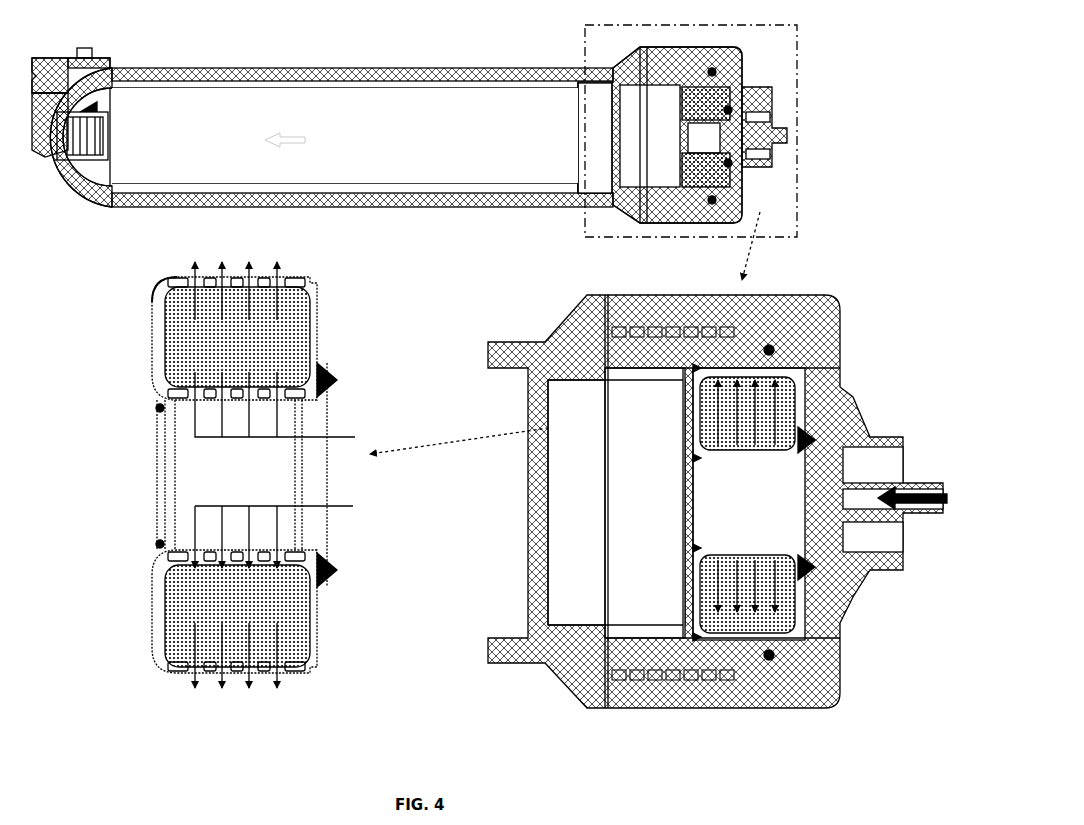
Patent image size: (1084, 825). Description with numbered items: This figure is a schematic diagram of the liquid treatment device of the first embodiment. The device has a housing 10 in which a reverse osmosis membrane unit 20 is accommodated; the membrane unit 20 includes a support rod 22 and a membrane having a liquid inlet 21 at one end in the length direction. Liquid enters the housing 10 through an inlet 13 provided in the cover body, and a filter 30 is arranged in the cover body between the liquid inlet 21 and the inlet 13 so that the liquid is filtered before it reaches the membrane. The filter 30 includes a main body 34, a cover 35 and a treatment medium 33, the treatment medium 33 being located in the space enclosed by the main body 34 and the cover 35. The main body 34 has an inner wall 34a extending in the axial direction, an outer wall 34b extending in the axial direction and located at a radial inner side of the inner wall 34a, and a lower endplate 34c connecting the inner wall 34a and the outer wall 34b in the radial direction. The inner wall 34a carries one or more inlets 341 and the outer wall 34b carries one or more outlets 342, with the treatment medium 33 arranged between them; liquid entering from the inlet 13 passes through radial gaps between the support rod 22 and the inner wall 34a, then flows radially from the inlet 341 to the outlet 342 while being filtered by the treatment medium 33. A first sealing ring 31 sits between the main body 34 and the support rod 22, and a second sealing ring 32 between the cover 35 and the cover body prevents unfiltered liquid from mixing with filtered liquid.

The housing 10 is at (306, 62).
The reverse osmosis membrane unit 20 is at (423, 103).
The inlet 13 is at (913, 488).
The liquid inlet 21 is at (692, 574).
The support rod 22 is at (757, 502).
The filter 30 is at (226, 458).
The first sealing ring 31 is at (156, 543).
The second sealing ring 32 is at (338, 571).
The treatment medium 33 is at (277, 612).
The main body 34 is at (230, 333).
The inner wall 34a is at (300, 394).
The outer wall 34b is at (292, 283).
The lower endplate 34c is at (160, 316).
The cover 35 is at (308, 311).
The inlet 341 is at (200, 400).
The outlet 342 is at (190, 276).